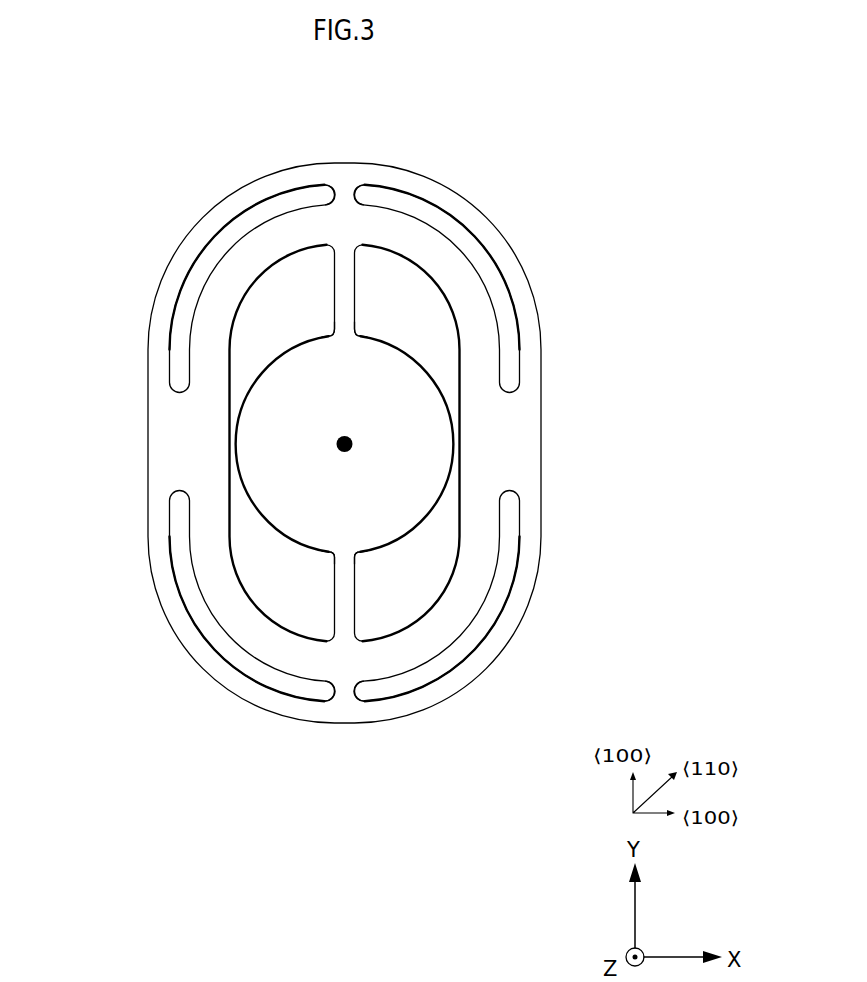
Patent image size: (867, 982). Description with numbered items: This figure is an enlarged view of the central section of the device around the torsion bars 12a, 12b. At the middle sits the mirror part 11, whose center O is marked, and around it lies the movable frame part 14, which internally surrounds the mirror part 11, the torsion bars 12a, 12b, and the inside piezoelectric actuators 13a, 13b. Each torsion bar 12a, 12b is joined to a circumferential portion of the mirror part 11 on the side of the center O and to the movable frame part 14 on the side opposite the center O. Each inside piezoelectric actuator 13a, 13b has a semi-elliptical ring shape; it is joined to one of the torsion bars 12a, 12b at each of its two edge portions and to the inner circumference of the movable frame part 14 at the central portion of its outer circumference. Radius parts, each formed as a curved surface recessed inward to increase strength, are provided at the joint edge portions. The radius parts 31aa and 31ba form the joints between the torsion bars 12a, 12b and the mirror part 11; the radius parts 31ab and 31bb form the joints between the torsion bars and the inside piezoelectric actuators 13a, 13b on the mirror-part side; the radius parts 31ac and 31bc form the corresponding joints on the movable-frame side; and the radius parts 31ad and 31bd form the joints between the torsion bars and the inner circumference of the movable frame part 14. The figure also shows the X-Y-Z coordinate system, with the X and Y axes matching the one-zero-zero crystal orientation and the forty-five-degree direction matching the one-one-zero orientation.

The mirror part 11 is at (432, 447).
The torsion bar 12a is at (356, 300).
The torsion bar 12b is at (356, 586).
The inside piezoelectric actuator 13a is at (205, 352).
The inside piezoelectric actuator 13b is at (477, 548).
The movable frame part 14 is at (205, 238).
The center O is at (338, 443).
The radius part 31aa is at (333, 327).
The radius part 31ab is at (317, 200).
The radius part 31ac is at (317, 257).
The radius part 31ad is at (318, 191).
The radius part 31ba is at (360, 332).
The radius part 31bb is at (372, 200).
The radius part 31bc is at (372, 257).
The radius part 31bd is at (371, 191).